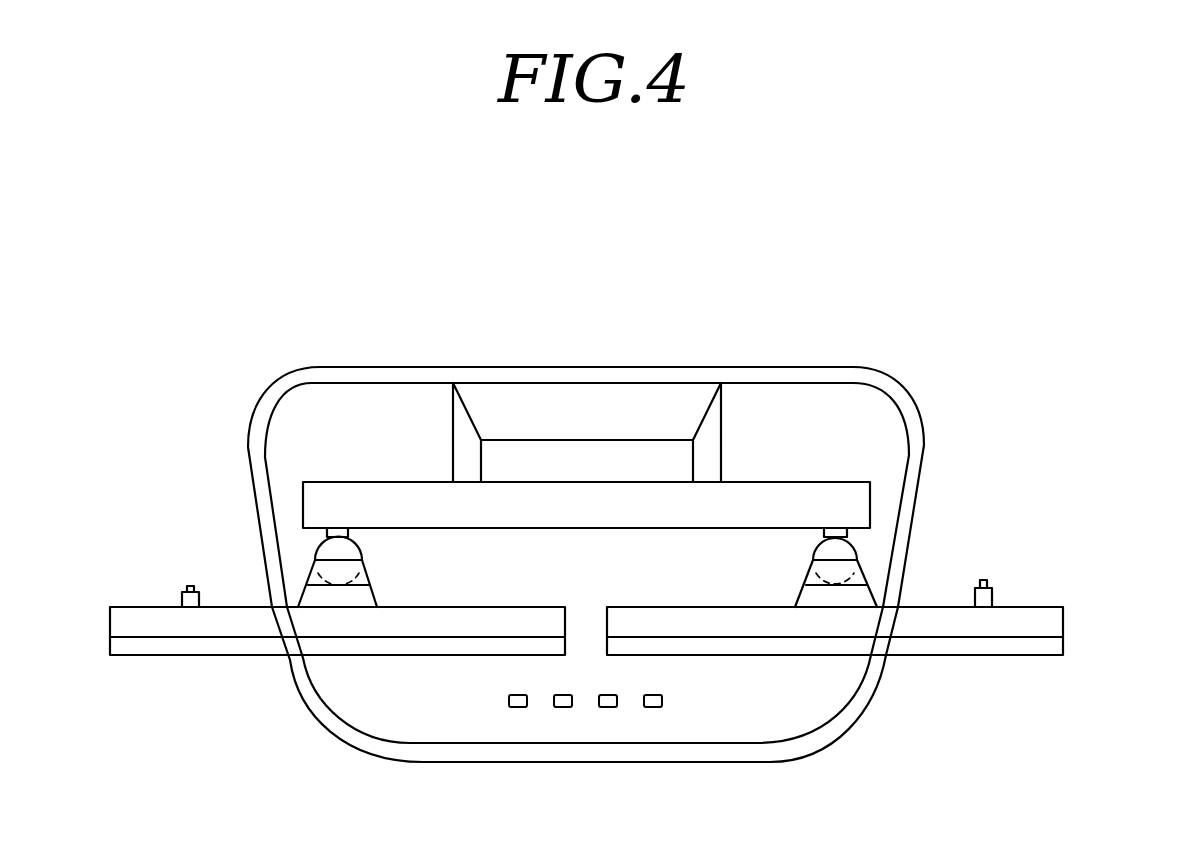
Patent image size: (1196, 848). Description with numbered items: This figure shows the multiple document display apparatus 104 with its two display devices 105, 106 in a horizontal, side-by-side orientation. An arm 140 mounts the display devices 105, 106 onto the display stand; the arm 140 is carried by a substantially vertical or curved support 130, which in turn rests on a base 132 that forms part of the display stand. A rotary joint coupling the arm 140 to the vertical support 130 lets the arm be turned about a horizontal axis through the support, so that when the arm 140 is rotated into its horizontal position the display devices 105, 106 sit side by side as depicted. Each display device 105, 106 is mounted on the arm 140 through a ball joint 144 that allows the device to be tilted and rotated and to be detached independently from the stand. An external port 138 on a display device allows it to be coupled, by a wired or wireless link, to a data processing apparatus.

The multiple document display apparatus 104 is at (908, 291).
The vertical support 130 is at (625, 398).
The base 132 is at (900, 380).
The arm 140 is at (785, 480).
The ball joint 144 is at (317, 555).
The external port 138 is at (993, 593).
The display device 106 is at (227, 656).
The display device 105 is at (945, 655).